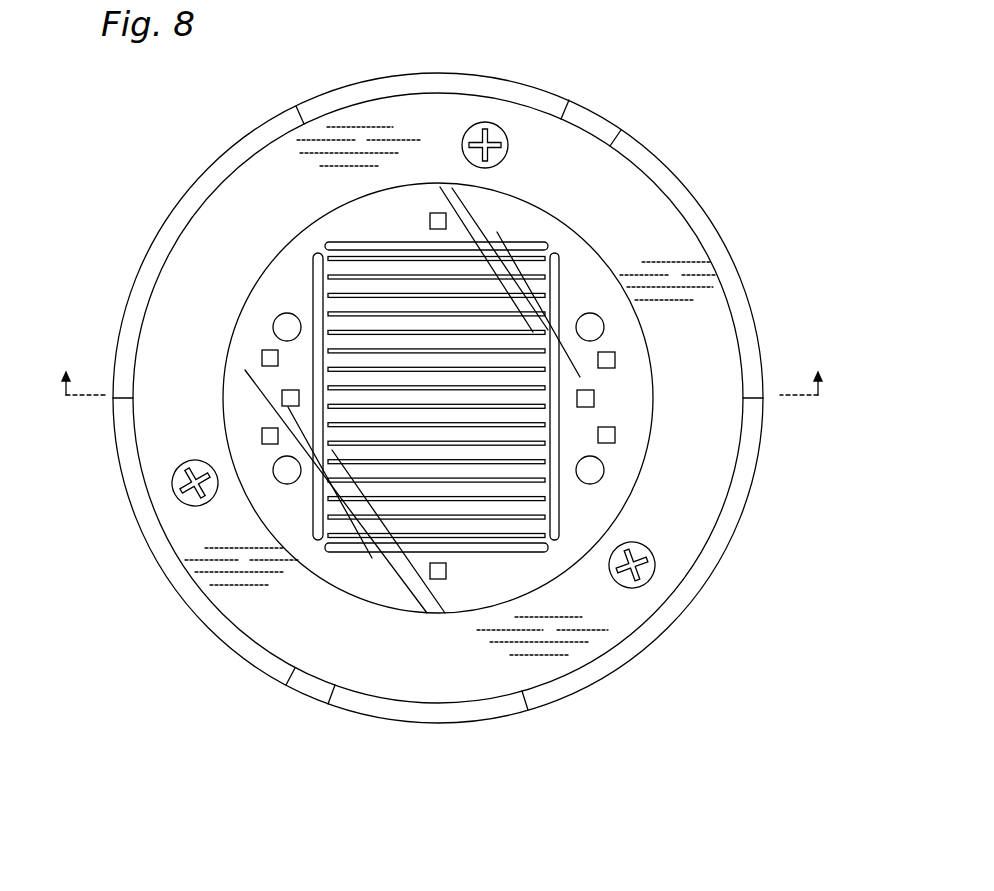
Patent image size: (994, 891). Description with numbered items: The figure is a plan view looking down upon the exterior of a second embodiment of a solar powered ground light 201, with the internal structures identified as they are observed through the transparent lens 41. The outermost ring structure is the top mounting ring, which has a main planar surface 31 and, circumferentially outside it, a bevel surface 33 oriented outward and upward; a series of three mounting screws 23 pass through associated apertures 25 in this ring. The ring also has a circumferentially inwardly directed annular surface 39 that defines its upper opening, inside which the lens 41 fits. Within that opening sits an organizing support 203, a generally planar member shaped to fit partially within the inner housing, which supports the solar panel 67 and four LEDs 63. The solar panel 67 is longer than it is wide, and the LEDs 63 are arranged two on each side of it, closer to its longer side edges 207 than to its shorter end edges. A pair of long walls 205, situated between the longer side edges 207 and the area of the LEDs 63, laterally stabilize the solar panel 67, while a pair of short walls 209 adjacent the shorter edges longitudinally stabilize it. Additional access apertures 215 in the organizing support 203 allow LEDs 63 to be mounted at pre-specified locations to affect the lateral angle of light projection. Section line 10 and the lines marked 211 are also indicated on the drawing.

The solar powered ground light 201 is at (668, 90).
The main planar surface 31 is at (553, 92).
The bevel surface 33 is at (348, 97).
The apertures 25 is at (503, 100).
The circumferentially inwardly directed annular surface 39 is at (663, 358).
The lens 41 is at (598, 190).
The solar panel 67 is at (320, 523).
The organizing support 203 is at (495, 565).
The short walls 209 is at (363, 240).
The long walls 205 is at (313, 270).
The longer side edges 207 is at (313, 305).
The wire 211 is at (540, 256).
The additional access apertures 215 is at (437, 213).
The LEDs 63 is at (285, 325).
The mounting screws 23 is at (478, 124).
The section line 10 is at (445, 364).